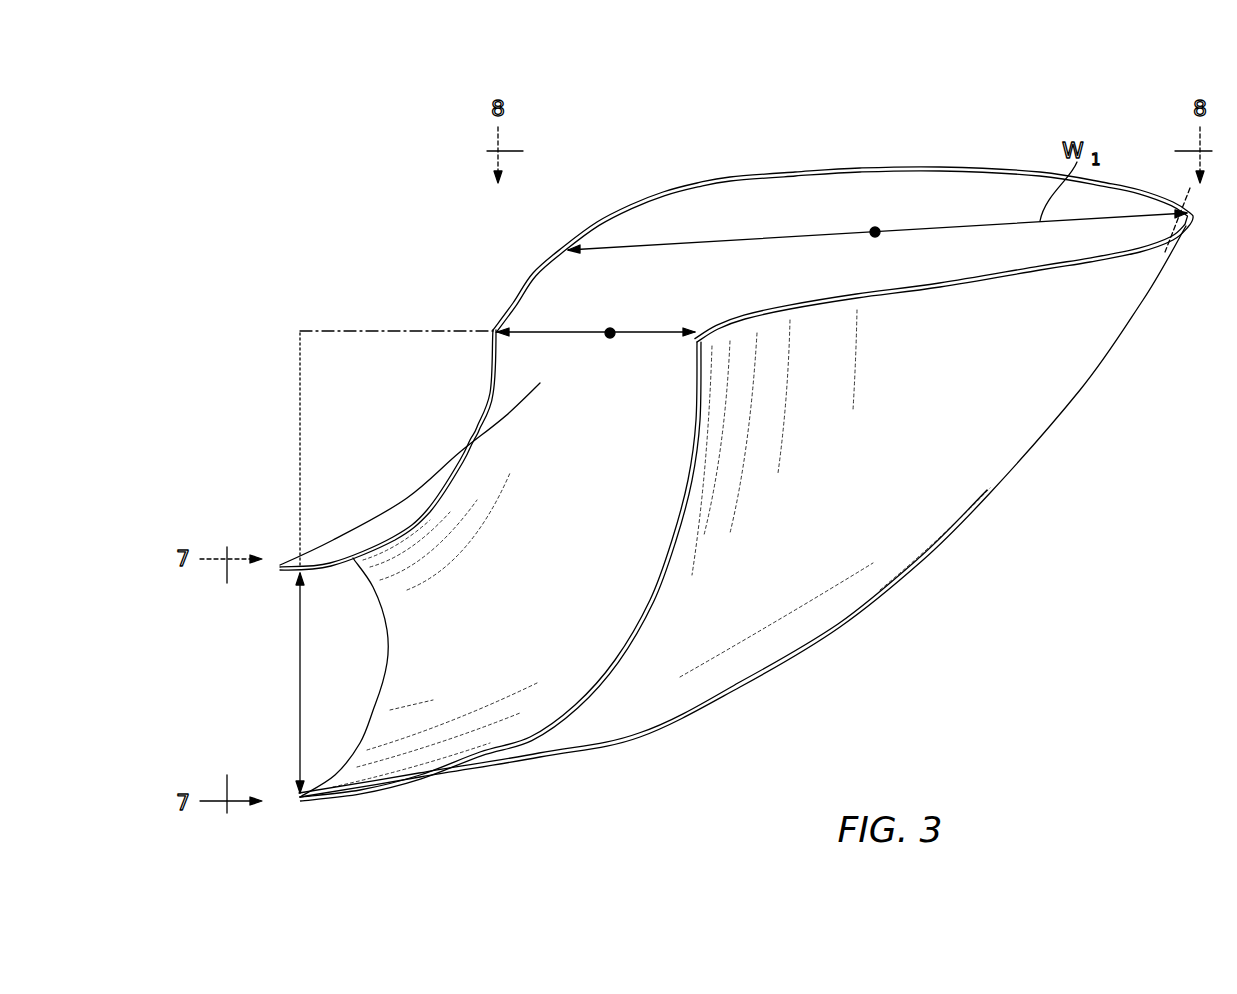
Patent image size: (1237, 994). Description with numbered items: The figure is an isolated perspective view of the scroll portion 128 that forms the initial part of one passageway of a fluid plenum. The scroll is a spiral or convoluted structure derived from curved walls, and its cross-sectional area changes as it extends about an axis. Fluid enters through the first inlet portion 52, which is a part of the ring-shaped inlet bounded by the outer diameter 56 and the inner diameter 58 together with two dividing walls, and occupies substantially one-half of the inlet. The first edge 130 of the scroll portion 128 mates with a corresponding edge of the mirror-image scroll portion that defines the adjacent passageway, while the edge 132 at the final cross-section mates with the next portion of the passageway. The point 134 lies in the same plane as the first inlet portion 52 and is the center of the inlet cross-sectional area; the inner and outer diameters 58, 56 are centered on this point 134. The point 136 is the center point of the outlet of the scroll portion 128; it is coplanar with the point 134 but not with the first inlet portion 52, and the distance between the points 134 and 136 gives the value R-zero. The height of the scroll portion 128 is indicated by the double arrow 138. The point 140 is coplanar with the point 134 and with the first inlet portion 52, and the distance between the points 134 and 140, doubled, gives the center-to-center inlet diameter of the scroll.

The first inlet portion 52 is at (582, 770).
The outer diameter 56 is at (640, 627).
The inner diameter 58 is at (407, 498).
The scroll portion 128 is at (947, 593).
The first edge 130 is at (282, 567).
The edge 132 is at (660, 190).
The point 134 is at (300, 330).
The point 136 is at (876, 230).
The double arrow 138 is at (302, 650).
The point 140 is at (610, 333).